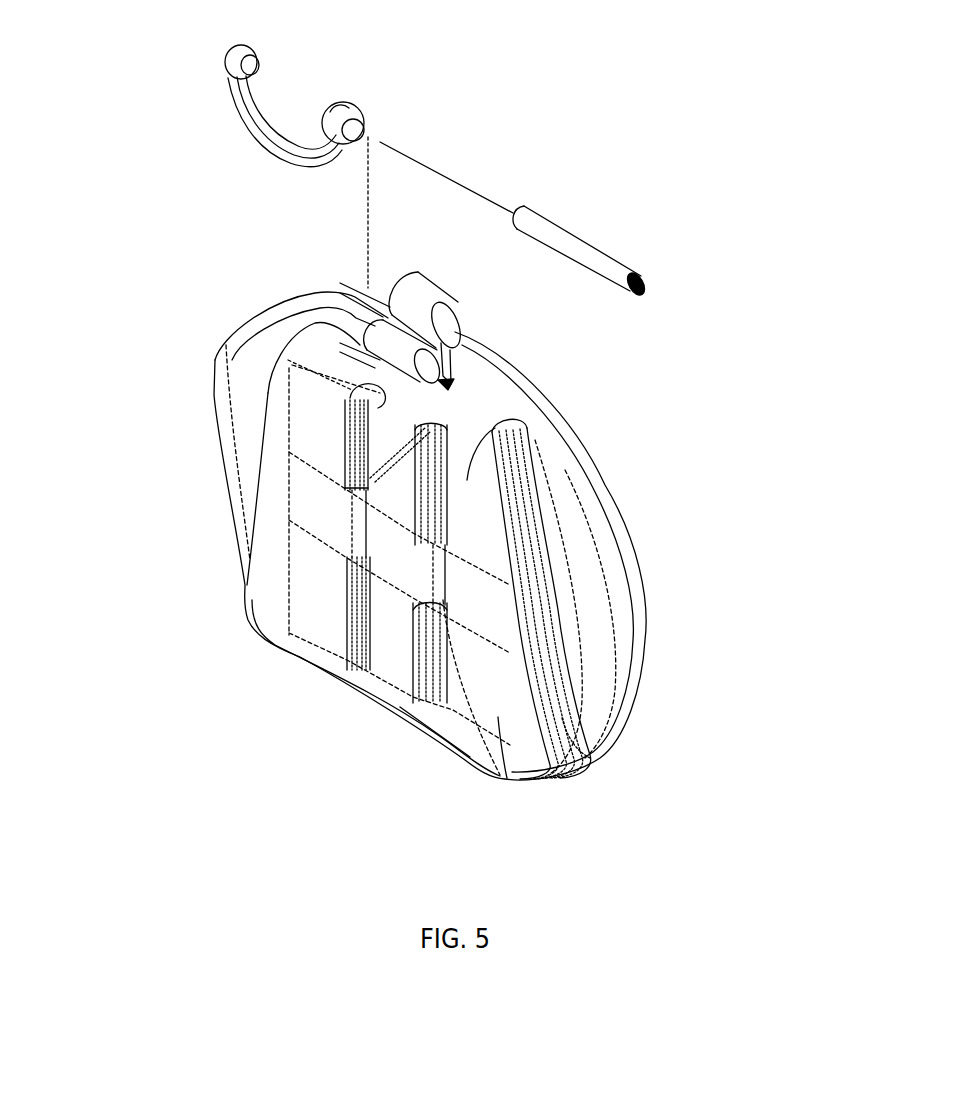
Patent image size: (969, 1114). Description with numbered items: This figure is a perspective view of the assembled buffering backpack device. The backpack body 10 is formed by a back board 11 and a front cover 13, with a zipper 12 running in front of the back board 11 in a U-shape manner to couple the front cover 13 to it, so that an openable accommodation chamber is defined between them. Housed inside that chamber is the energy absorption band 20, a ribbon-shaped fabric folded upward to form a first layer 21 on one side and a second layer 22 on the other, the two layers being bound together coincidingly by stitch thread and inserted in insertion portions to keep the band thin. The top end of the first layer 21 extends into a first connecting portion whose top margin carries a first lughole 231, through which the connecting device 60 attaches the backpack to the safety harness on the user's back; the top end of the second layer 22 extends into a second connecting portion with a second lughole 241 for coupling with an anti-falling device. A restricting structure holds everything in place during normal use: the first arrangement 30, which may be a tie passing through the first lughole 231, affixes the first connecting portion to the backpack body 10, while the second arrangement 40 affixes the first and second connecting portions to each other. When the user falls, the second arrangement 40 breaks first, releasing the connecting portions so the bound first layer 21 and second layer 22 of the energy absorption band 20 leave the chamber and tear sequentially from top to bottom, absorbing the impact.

The backpack body 10 is at (647, 638).
The back board 11 is at (623, 547).
The zipper 12 is at (562, 718).
The front cover 13 is at (453, 723).
The energy absorption band 20 is at (367, 283).
The first layer 21 is at (300, 565).
The second layer 22 is at (498, 717).
The first arrangement 30 is at (515, 438).
The second arrangement 40 is at (360, 365).
The connecting device 60 is at (637, 182).
The first lughole 231 is at (450, 317).
The second lughole 241 is at (433, 403).